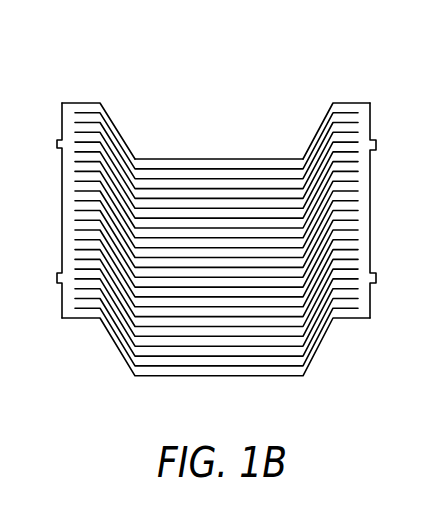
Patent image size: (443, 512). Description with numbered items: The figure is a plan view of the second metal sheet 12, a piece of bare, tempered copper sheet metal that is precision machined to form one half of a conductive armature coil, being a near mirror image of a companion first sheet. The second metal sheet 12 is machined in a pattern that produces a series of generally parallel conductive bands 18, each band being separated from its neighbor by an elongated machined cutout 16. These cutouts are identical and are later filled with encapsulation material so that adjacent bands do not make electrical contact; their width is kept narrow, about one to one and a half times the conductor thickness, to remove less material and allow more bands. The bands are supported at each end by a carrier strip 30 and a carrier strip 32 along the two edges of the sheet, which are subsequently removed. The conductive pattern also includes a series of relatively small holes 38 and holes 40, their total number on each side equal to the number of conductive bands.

The second metal sheet 12 is at (262, 42).
The elongated machined cutout 16 is at (90, 310).
The conductive bands 18 is at (190, 376).
The carrier strip 30 is at (68, 302).
The carrier strip 32 is at (360, 318).
The holes 38 is at (333, 104).
The holes 40 is at (100, 103).